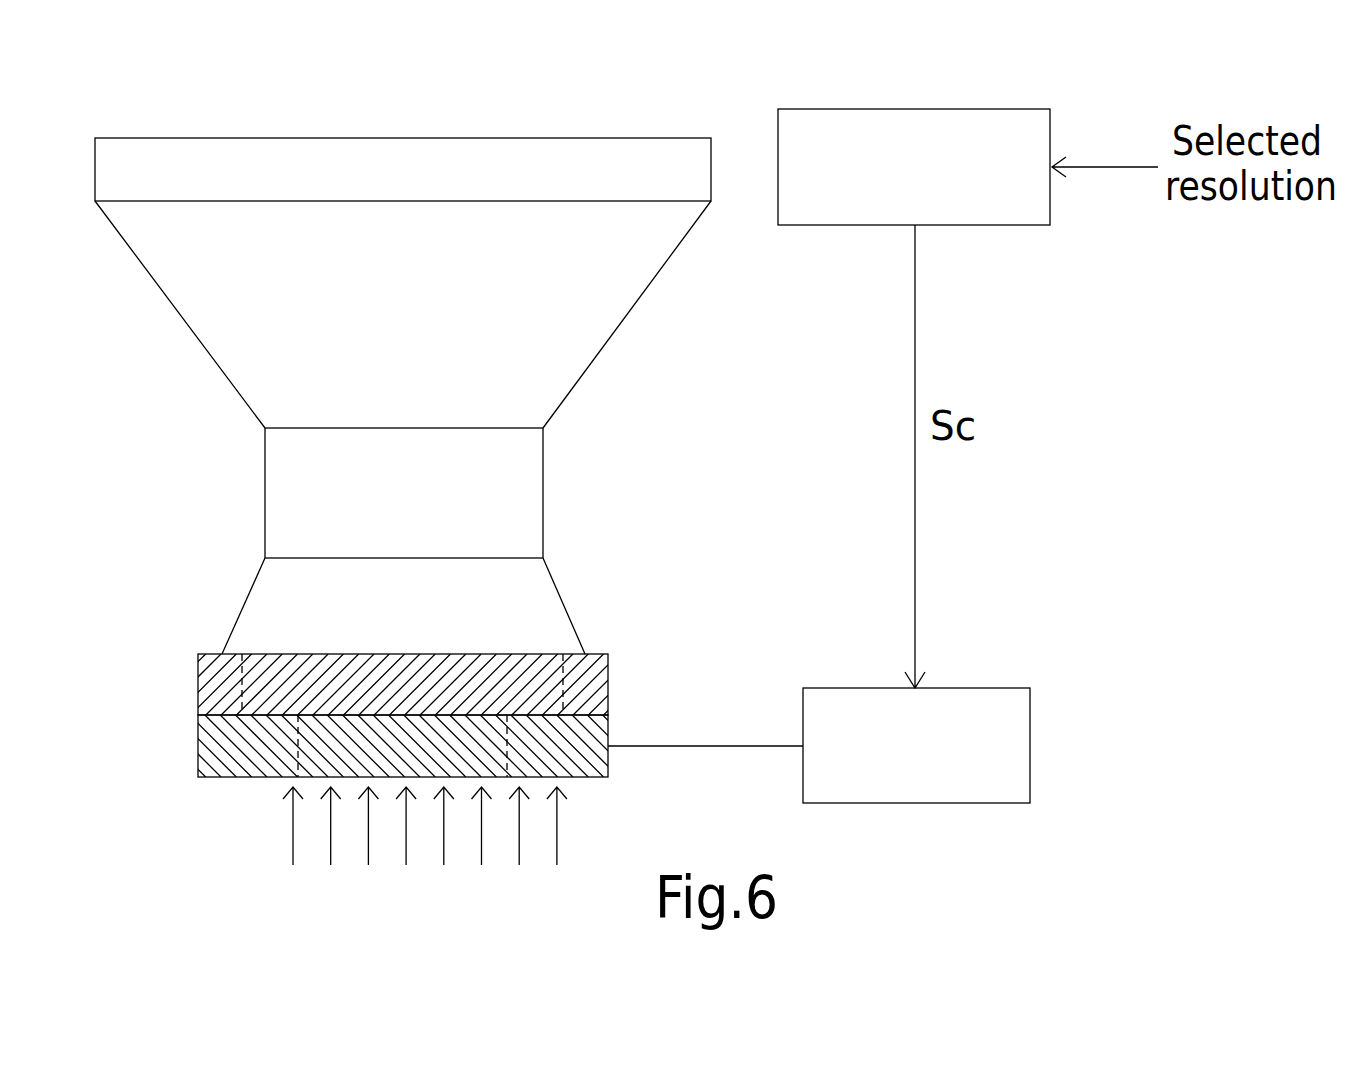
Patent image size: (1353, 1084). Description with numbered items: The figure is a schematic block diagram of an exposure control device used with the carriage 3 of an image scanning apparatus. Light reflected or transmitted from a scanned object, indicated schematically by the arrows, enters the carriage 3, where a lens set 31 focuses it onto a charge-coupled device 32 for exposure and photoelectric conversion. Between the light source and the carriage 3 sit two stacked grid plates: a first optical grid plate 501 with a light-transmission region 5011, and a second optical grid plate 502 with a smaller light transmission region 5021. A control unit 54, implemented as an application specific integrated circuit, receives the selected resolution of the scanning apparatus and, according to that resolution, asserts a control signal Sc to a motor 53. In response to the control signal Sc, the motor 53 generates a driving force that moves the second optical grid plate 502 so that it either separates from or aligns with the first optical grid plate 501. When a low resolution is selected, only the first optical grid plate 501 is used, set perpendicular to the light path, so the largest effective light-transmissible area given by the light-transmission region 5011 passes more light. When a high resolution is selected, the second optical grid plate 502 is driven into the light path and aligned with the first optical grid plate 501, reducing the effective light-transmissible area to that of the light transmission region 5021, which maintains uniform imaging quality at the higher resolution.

The carriage 3 is at (419, 373).
The lens set 31 is at (522, 500).
The charge-coupled device 32 is at (660, 155).
The first optical grid plate 501 is at (416, 662).
The light-transmission region 5011 is at (432, 673).
The second optical grid plate 502 is at (400, 730).
The light transmission region 5021 is at (317, 740).
The motor 53 is at (975, 705).
The control unit 54 is at (994, 127).